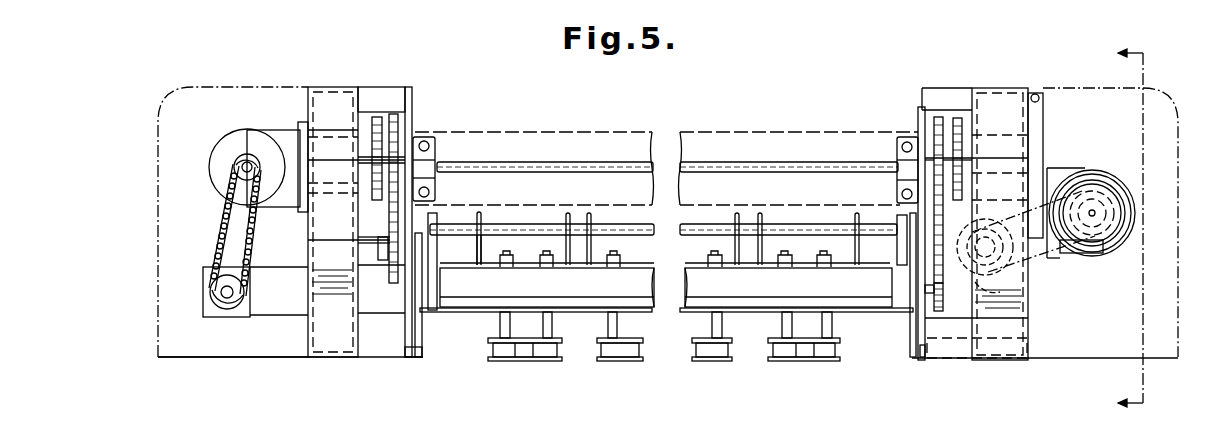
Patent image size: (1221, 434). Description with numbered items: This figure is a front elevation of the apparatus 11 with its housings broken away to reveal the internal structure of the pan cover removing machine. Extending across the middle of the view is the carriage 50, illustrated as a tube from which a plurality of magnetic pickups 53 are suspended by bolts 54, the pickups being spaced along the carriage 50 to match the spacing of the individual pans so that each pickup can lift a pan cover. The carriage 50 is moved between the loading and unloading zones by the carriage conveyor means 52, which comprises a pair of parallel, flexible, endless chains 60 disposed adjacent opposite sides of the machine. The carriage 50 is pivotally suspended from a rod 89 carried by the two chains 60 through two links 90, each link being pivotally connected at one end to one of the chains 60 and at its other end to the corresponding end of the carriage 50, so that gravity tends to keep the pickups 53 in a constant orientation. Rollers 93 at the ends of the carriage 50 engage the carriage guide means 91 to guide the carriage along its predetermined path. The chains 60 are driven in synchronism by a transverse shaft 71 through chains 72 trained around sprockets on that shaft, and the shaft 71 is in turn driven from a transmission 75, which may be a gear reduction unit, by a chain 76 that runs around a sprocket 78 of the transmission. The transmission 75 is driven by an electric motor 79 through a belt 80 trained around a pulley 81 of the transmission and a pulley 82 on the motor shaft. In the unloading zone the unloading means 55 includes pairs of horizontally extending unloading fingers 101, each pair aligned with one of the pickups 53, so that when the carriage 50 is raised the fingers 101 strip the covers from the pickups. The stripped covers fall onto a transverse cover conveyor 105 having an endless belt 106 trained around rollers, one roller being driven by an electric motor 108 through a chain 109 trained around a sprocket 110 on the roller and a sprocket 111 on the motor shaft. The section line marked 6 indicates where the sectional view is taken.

The section line 6- 6 is at (1142, 228).
The apparatus 11 is at (1185, 112).
The carriage 50 is at (472, 312).
The carriage conveyor means 52 is at (400, 112).
The magnetic pickups 53 is at (510, 346).
The bolts 54 is at (500, 328).
The unloading means 55 is at (595, 218).
The chains 60 is at (402, 128).
The transverse shaft 71 is at (522, 162).
The chains 72 is at (378, 117).
The transmission 75 is at (1028, 318).
The chain 76 is at (930, 300).
The sprocket 78 is at (938, 288).
The electric motor 79 is at (1135, 205).
The belt 80 is at (1055, 256).
The pulley 81 is at (977, 283).
The pulley 82 is at (1115, 225).
The rod 89 is at (535, 226).
The links 90 is at (452, 268).
The carriage guide means 91 is at (410, 357).
The rollers 93 is at (413, 326).
The unloading fingers 101 is at (567, 254).
The transverse conveyor 105 is at (294, 319).
The endless belt 106 is at (265, 316).
The electric motor 108 is at (212, 163).
The chain 109 is at (207, 241).
The sprocket 110 is at (220, 305).
The sprocket 111 is at (232, 178).